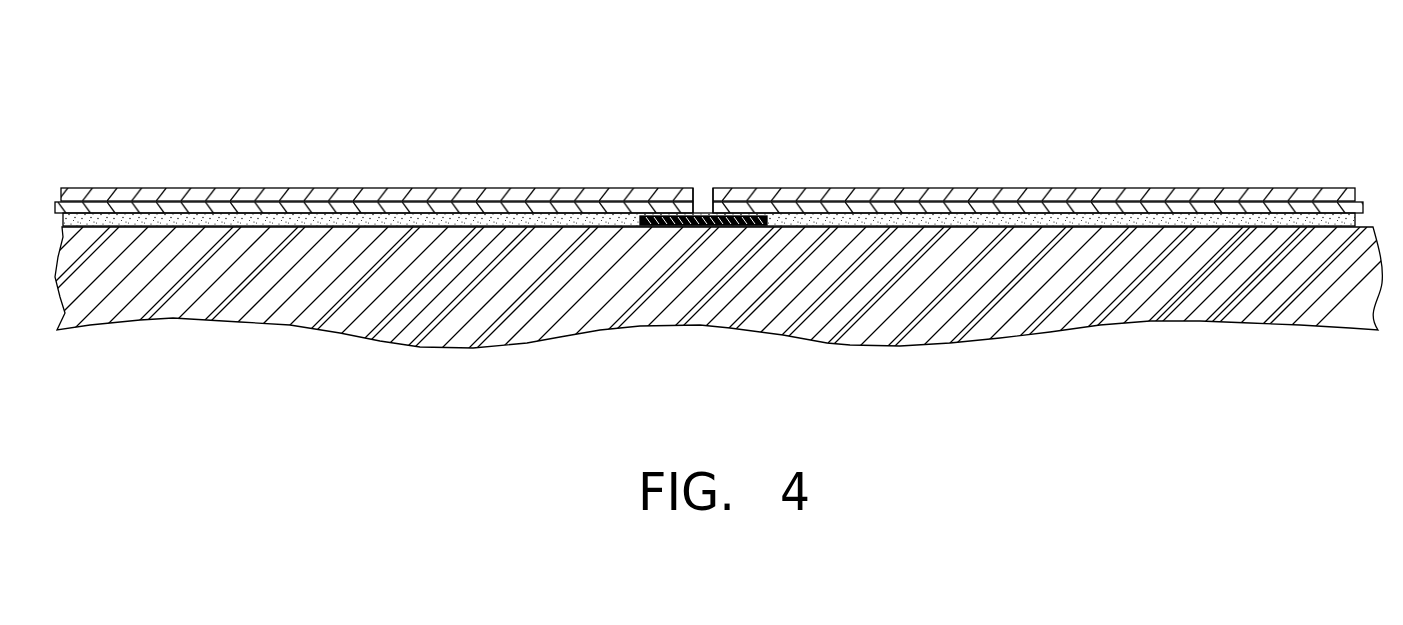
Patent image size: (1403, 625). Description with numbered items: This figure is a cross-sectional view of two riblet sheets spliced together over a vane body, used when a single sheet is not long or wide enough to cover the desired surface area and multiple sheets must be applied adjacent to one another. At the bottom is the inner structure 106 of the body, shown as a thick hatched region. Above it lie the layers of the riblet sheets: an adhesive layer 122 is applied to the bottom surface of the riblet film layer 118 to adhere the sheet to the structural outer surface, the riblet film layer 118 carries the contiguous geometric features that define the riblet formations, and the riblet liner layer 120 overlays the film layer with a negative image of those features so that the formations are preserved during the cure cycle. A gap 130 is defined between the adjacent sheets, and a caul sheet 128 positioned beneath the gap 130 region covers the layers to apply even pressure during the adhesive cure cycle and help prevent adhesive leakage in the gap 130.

The inner structure 106 is at (510, 267).
The riblet film layer 118 is at (1173, 208).
The riblet liner layer 120 is at (1058, 198).
The adhesive layer 122 is at (395, 220).
The caul sheet 128 is at (755, 217).
The gap 130 is at (703, 187).